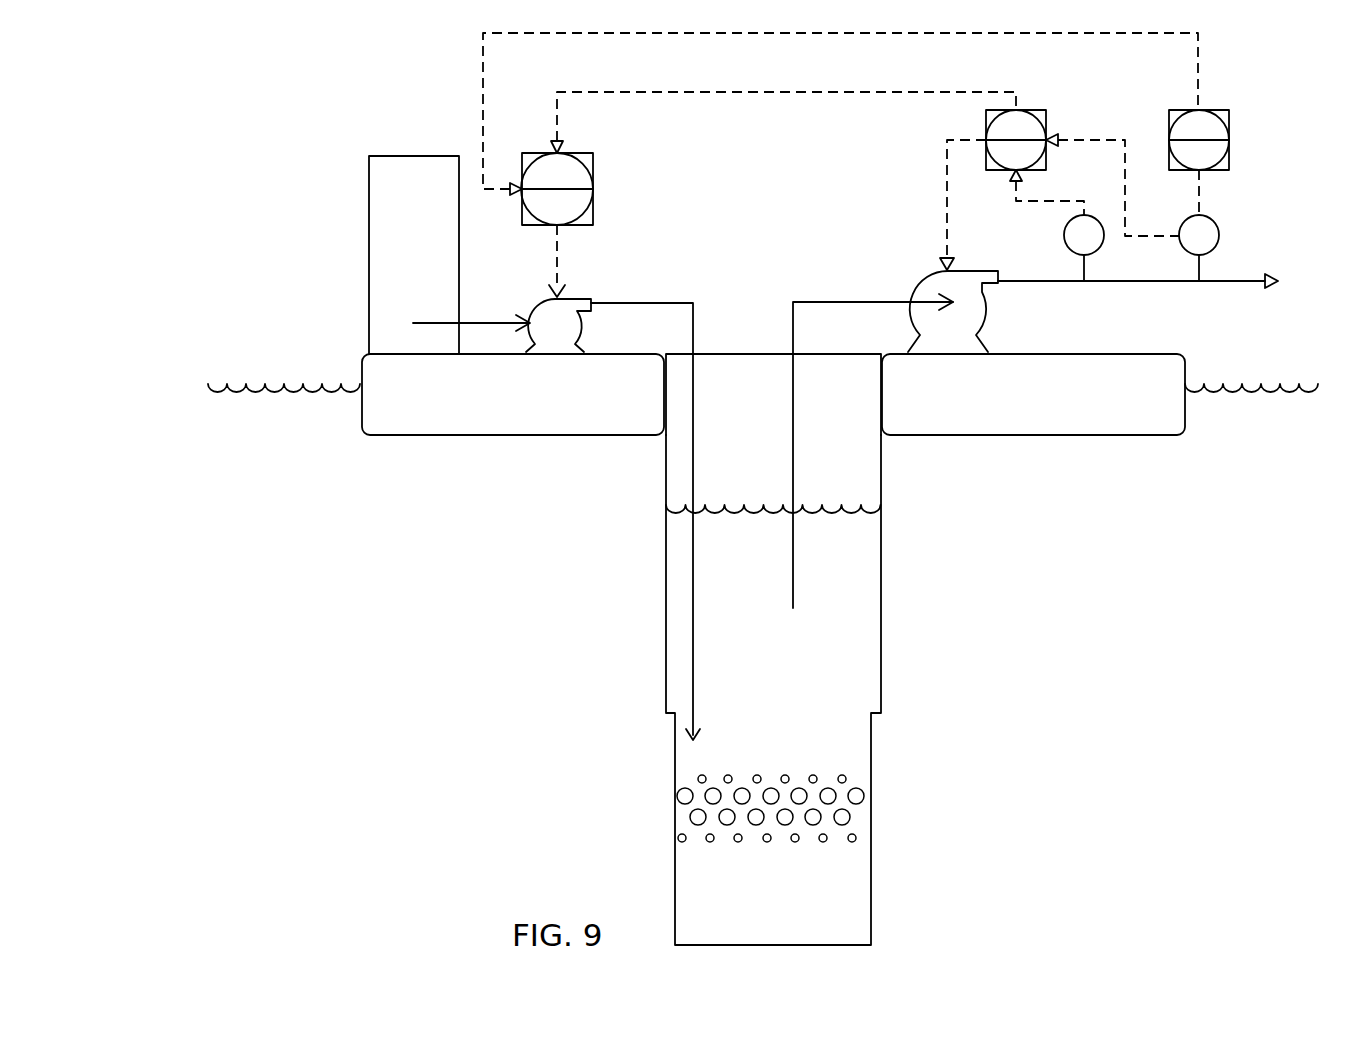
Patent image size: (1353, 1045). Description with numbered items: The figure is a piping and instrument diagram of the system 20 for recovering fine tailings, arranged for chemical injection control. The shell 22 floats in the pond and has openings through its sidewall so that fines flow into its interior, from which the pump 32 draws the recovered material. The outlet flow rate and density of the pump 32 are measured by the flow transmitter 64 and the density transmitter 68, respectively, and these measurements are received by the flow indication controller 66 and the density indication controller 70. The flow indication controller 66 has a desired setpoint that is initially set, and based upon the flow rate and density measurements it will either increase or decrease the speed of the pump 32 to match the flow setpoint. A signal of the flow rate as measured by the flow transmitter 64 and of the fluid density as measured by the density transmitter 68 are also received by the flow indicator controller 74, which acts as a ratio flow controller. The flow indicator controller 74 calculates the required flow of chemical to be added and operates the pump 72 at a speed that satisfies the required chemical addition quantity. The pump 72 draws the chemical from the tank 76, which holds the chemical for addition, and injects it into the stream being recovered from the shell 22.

The system 20 is at (220, 222).
The shell 22 is at (881, 668).
The pump 32 is at (987, 313).
The flow transmitter 64 is at (1100, 248).
The flow indication controller 66 is at (1047, 120).
The density transmitter 68 is at (1219, 228).
The density indication controller 70 is at (1229, 120).
The pump 72 is at (554, 347).
The flow indicator controller 74 is at (593, 180).
The tank 76 is at (388, 288).